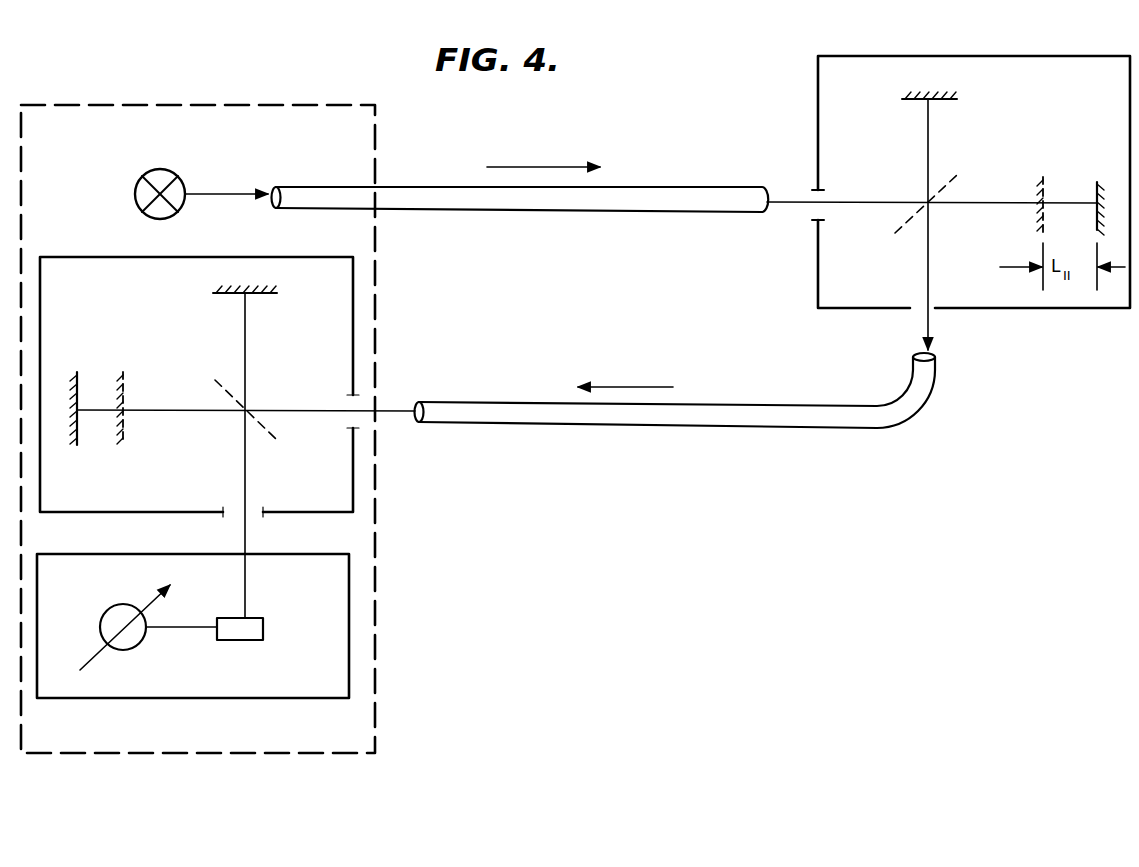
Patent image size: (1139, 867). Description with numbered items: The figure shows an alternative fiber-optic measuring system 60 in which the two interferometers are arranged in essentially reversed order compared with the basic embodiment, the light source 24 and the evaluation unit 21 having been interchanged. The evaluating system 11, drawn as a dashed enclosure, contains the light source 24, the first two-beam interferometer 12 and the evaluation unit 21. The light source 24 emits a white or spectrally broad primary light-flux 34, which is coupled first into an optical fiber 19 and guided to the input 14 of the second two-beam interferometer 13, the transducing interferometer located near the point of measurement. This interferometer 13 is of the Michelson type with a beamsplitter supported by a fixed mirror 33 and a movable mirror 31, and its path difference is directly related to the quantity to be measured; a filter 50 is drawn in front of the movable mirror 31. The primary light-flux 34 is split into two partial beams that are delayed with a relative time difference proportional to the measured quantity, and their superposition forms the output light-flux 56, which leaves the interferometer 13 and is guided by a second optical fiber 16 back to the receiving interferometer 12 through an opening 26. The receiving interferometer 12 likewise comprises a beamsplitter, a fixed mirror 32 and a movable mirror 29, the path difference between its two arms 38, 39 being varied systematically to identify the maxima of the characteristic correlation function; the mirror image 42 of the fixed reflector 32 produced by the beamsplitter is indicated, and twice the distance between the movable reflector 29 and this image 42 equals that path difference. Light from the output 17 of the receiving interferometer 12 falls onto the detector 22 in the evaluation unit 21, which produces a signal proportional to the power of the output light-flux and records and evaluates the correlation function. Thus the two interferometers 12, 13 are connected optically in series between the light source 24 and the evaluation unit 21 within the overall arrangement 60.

The evaluating system 11 is at (360, 140).
The first two-beam interferometer 12 is at (337, 335).
The second two-beam interferometer 13 is at (832, 258).
The input of interferometer 13 14 is at (815, 195).
The optical fiber 16 is at (623, 420).
The output of the receiving interferometer 17 is at (252, 514).
The optical fiber 19 is at (614, 213).
The evaluation unit 21 is at (266, 688).
The detector 22 is at (254, 634).
The light source 24 is at (142, 188).
The exit opening 26 is at (355, 402).
The movable mirror 29 is at (78, 425).
The movable mirror 31 is at (1094, 196).
The fixed mirror 32 is at (216, 295).
The fixed mirror 33 is at (908, 100).
The primary light-flux 34 is at (526, 167).
The interferometer arm 38 is at (158, 412).
The interferometer arm 39 is at (246, 322).
The mirror image of the fixed reflector 42 is at (126, 387).
The filter 50 is at (1036, 196).
The output light-flux 56 is at (616, 387).
The measuring system 60 is at (677, 107).